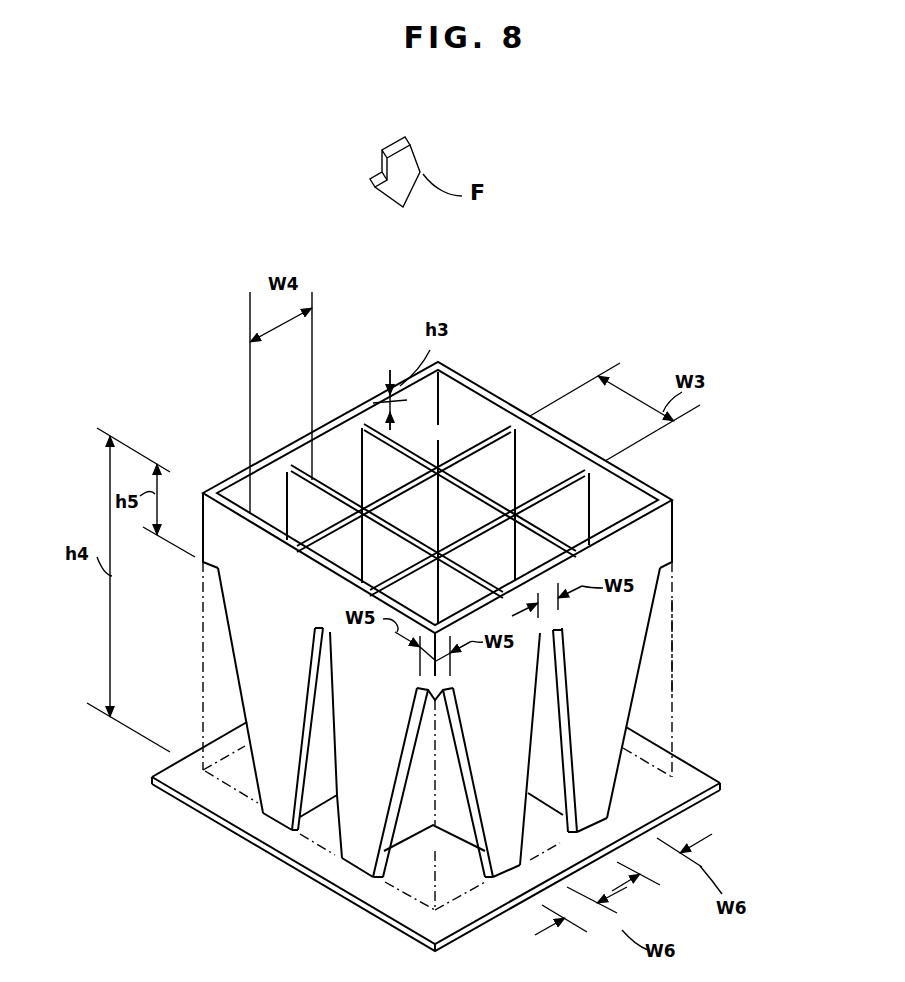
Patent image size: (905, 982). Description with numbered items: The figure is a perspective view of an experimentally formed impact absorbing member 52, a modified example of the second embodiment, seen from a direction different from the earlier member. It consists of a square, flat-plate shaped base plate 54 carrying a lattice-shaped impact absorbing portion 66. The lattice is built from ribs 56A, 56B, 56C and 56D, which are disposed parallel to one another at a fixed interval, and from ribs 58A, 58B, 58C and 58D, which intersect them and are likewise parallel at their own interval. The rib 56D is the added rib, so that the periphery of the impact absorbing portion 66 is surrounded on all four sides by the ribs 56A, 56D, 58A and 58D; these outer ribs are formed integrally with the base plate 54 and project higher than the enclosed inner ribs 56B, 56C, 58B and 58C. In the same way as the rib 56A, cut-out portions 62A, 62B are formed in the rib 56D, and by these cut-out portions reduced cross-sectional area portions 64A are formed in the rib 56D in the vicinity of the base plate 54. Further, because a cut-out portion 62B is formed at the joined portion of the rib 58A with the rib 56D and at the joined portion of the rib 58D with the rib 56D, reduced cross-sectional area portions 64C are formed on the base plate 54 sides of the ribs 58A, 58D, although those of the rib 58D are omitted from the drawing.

The impact absorbing member 52 is at (446, 473).
The base plate 54 is at (448, 830).
The rib 56A is at (339, 427).
The rib 56B is at (497, 419).
The rib 56C is at (552, 504).
The rib 56D is at (683, 614).
The rib 58A is at (462, 535).
The rib 58B is at (397, 513).
The rib 58C is at (404, 489).
The rib 58D is at (470, 480).
The cut-out portion 62A is at (455, 746).
The cut-out portion 62B is at (439, 590).
The reduced cross-sectional area portion 64A is at (600, 829).
The reduced cross-sectional area portion 64C is at (311, 828).
The impact absorbing portion 66 is at (719, 619).